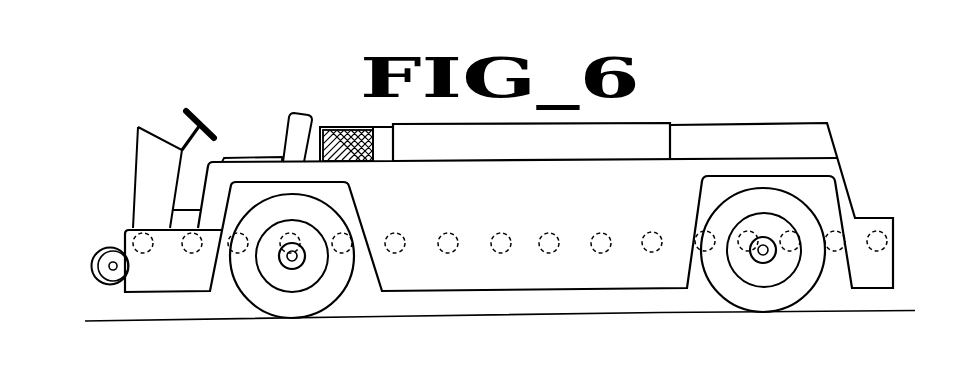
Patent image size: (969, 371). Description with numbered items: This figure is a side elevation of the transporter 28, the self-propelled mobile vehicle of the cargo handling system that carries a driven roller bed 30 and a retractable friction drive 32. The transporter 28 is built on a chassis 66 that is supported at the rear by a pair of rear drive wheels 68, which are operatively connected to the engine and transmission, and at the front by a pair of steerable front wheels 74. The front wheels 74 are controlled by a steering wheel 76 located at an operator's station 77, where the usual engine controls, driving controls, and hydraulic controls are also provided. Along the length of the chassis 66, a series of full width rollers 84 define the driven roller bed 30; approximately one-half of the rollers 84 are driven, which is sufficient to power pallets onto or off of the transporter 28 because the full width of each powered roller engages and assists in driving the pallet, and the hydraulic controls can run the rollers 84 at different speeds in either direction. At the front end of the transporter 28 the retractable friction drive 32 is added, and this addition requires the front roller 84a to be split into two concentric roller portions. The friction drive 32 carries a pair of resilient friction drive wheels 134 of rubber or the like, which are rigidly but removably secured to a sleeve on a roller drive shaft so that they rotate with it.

The transporter 28 is at (810, 102).
The driven roller bed 30 is at (610, 228).
The retractable friction drive 32 is at (85, 256).
The chassis 66 is at (167, 297).
The rear drive wheels 68 is at (773, 303).
The steerable front wheels 74 is at (302, 310).
The steering wheel 76 is at (191, 112).
The operator's station 77 is at (266, 121).
The full width rollers 84 is at (500, 235).
The front roller 84a is at (145, 253).
The resilient friction drive wheels 134 is at (107, 245).